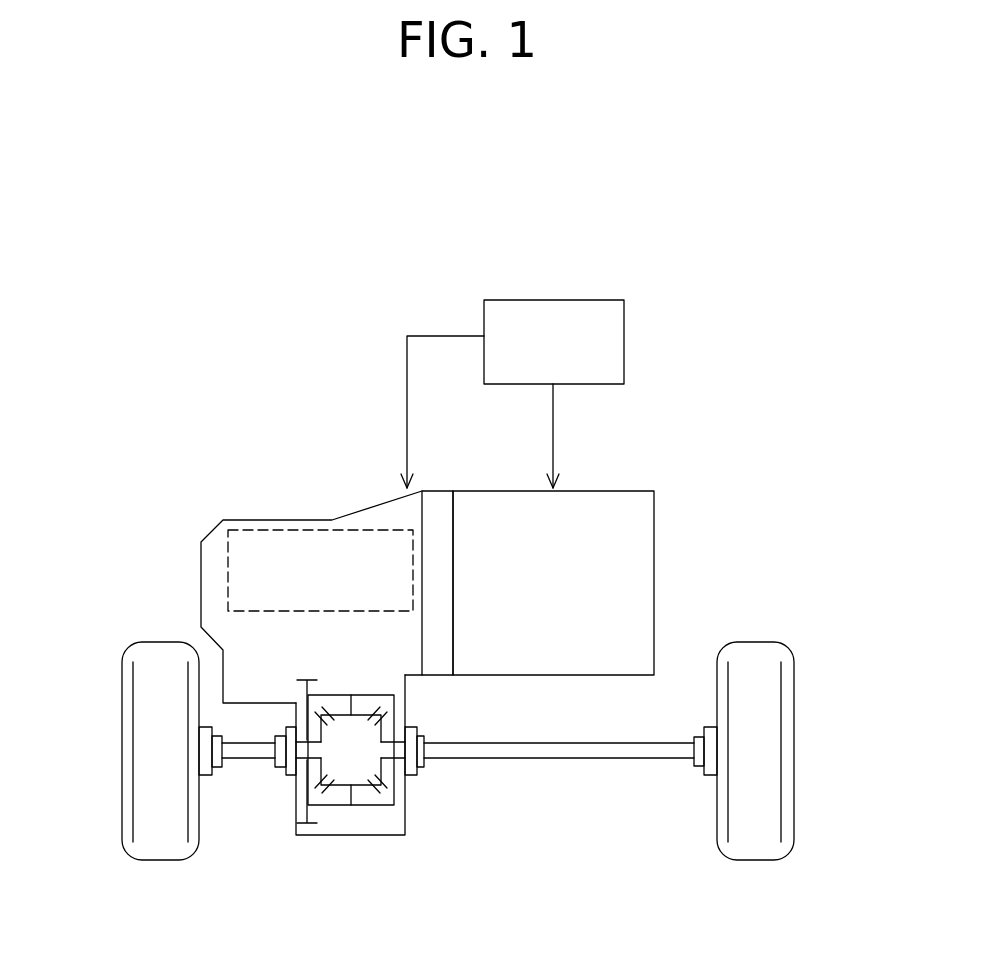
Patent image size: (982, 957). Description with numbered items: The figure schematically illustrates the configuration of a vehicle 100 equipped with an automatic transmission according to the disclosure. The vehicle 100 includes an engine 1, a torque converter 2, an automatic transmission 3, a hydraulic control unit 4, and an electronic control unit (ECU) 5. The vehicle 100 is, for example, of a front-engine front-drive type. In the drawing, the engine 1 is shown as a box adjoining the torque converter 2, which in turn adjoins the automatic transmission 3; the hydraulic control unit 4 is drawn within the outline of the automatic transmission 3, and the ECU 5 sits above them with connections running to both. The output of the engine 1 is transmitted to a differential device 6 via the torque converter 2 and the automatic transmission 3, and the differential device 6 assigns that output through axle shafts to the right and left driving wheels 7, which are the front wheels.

The vehicle 100 is at (701, 420).
The engine 1 is at (655, 532).
The torque converter 2 is at (437, 500).
The automatic transmission 3 is at (221, 612).
The hydraulic control unit 4 is at (228, 562).
The electronic control unit (ECU) 5 is at (584, 299).
The differential device 6 is at (344, 817).
The driving wheels (front wheels) 7 is at (121, 697).